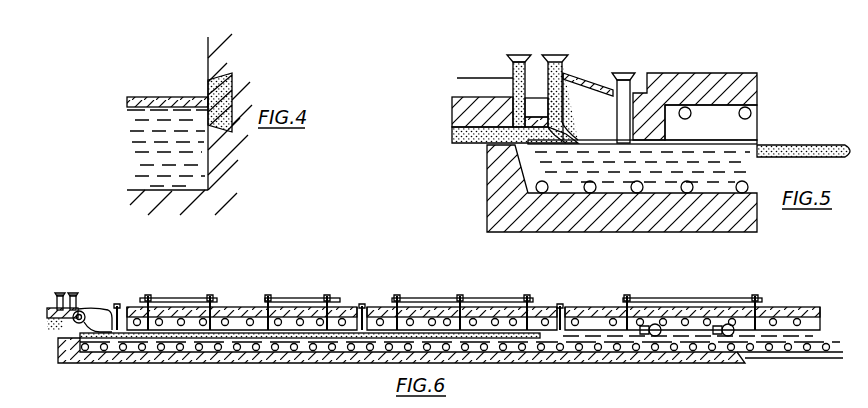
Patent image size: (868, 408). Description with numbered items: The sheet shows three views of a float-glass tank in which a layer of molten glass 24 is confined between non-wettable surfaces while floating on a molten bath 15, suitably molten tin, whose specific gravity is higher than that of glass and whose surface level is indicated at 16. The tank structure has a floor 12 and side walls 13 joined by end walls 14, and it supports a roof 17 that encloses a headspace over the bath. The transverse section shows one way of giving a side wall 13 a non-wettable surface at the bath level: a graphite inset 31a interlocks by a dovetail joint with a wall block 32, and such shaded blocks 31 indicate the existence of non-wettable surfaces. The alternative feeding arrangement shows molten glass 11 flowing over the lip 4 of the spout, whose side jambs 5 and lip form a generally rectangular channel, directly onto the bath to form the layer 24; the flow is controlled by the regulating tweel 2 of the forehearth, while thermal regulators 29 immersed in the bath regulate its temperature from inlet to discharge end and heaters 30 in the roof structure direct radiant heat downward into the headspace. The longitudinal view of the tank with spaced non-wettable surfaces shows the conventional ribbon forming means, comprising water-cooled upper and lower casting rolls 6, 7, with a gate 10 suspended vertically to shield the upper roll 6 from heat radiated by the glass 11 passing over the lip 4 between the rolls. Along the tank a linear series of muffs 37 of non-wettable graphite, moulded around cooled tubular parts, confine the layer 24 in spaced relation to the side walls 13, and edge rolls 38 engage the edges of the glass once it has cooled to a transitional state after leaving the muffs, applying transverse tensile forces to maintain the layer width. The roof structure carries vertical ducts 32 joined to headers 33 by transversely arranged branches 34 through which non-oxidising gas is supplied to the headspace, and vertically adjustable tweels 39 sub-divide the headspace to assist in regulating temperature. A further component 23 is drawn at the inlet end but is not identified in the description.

In FIG. 5, the regulating tweel 2 is at (513, 67).
In FIG. 6, the regulating tweel 2 is at (60, 293).
In FIG. 5, the lip 4 is at (500, 143).
In FIG. 5, the side jamb 5 is at (535, 98).
In FIG. 6, the upper casting roll 6 is at (82, 311).
In FIG. 6, the lower casting roll 7 is at (68, 335).
In FIG. 5, the gate 10 is at (562, 66).
In FIG. 6, the gate 10 is at (73, 293).
In FIG. 5, the molten glass 11 is at (458, 108).
In FIG. 6, the molten glass 11 is at (49, 322).
In FIG. 4, the floor 12 is at (180, 210).
In FIG. 5, the floor 12 is at (560, 212).
In FIG. 4, the side wall 13 is at (232, 158).
In FIG. 5, the end wall 14 is at (497, 180).
In FIG. 4, the molten bath 15 is at (150, 152).
In FIG. 4, the surface level of the bath 16 is at (150, 110).
In FIG. 5, the surface level of the bath 16 is at (757, 148).
In FIG. 6, the roof 17 is at (598, 312).
In FIG. 6, the guide tube 23 is at (96, 318).
In FIG. 4, the layer of molten glass 24 is at (178, 97).
In FIG. 6, the layer of molten glass 24 is at (178, 338).
In FIG. 5, the thermal regulator 29 is at (637, 192).
In FIG. 5, the heater 30 is at (751, 113).
In FIG. 5, the shaded structural block 31 is at (838, 148).
In FIG. 4, the graphite inset 31a is at (232, 90).
In FIG. 6, the wall block 32 is at (162, 300).
In FIG. 6, the header 33 is at (287, 298).
In FIG. 6, the transverse branch of header 34 is at (150, 308).
In FIG. 6, the muff 37 is at (225, 345).
In FIG. 6, the edge roll 38 is at (650, 336).
In FIG. 6, the vertically adjustable tweel 39 is at (118, 304).